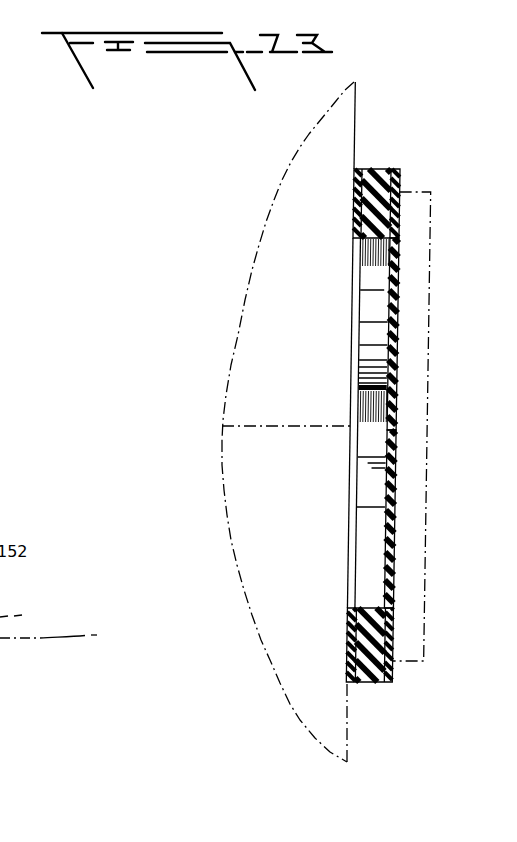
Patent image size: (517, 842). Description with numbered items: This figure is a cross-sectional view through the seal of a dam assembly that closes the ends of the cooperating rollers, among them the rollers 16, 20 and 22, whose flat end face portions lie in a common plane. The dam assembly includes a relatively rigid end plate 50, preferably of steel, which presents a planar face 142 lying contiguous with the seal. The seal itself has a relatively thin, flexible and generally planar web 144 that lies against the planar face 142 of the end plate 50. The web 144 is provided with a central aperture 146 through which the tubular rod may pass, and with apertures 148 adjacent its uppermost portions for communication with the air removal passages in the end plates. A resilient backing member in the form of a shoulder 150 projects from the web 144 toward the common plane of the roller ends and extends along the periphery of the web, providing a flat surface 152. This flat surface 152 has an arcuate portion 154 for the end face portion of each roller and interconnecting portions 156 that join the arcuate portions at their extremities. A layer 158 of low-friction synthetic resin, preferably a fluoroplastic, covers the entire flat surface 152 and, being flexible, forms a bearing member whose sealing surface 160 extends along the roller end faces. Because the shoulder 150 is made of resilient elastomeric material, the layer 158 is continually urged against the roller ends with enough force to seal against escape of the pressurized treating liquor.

The roller 16 is at (231, 546).
The roller 20 is at (50, 641).
The roller 22 is at (248, 268).
The end plate 50 is at (438, 305).
The planar face 142 is at (358, 270).
The web 144 is at (394, 588).
The central aperture 146 is at (394, 432).
The apertures 148 is at (394, 263).
The shoulder 150 is at (381, 170).
The flat surface 152 is at (352, 566).
The arcuate portion 154 is at (357, 507).
The interconnecting portions 156 is at (357, 442).
The layer 158 is at (355, 290).
The sealing surface 160 is at (355, 312).